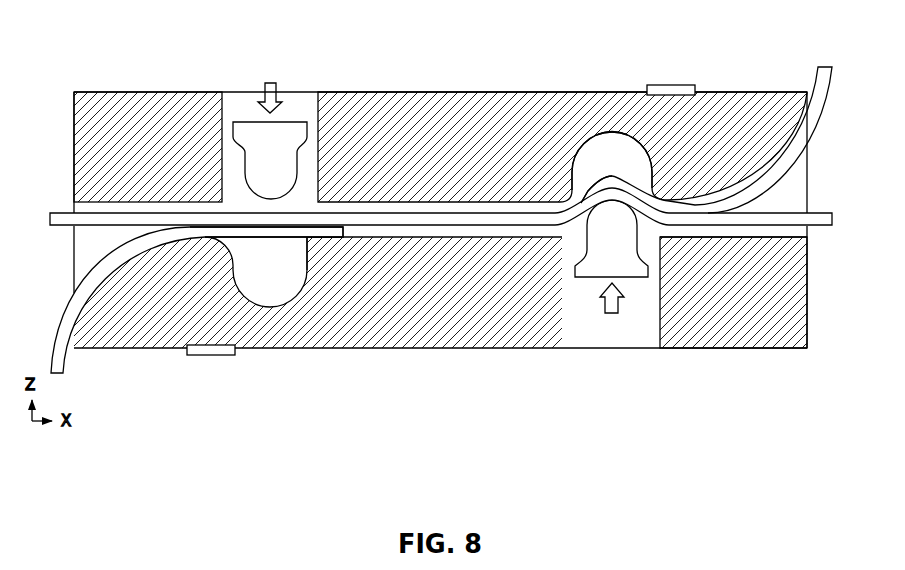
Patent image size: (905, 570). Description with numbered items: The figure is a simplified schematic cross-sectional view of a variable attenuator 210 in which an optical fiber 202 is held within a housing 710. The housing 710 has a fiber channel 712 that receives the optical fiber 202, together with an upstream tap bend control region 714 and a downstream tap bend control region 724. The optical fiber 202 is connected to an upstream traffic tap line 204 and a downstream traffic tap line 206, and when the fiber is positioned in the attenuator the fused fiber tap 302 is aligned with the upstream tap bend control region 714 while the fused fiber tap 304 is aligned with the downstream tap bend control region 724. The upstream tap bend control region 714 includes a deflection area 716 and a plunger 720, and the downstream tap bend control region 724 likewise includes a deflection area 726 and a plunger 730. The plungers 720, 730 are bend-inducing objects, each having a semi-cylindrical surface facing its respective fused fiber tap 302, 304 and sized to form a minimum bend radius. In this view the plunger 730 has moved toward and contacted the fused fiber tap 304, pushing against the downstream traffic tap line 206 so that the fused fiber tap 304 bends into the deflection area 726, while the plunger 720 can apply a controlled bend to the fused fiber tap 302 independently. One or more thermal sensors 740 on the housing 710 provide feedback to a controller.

The variable attenuator 210 is at (452, 216).
The optical fiber 202 is at (50, 212).
The upstream traffic tap line 204 is at (59, 318).
The downstream traffic tap line 206 is at (817, 76).
The fused fiber tap 302 is at (305, 238).
The fused fiber tap 304 is at (592, 184).
The housing 710 is at (798, 268).
The fiber channel 712 is at (816, 209).
The upstream tap bend control region 714 is at (308, 304).
The deflection area 716 is at (287, 280).
The plunger 720 is at (284, 172).
The downstream tap bend control region 724 is at (590, 130).
The deflection area 726 is at (621, 164).
The plunger 730 is at (625, 250).
The thermal sensor 740 is at (681, 85).